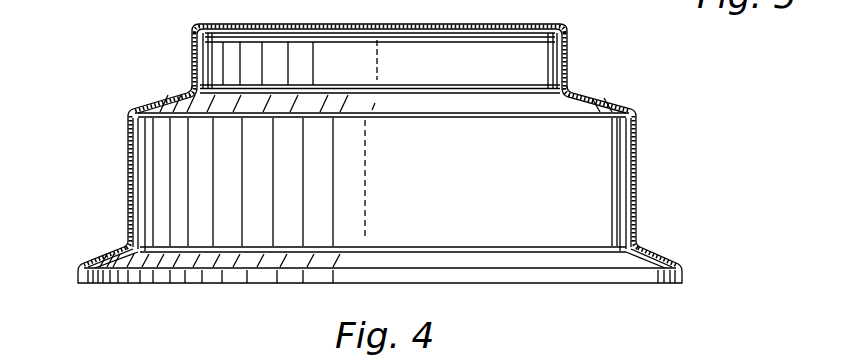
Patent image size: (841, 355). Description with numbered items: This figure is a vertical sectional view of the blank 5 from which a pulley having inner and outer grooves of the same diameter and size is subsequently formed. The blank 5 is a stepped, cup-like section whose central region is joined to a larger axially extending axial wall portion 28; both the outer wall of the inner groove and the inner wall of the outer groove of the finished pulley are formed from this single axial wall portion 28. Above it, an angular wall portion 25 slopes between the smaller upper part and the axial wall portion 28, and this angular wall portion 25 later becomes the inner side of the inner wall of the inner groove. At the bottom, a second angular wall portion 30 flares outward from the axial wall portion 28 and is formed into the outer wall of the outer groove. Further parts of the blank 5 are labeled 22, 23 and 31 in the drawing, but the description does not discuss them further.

The blank 5 is at (642, 151).
The top wall 22 is at (510, 26).
The neck side wall 23 is at (567, 68).
The angular wall portion 25 is at (607, 103).
The axial wall portion 28 is at (637, 190).
The angular wall portion 30 is at (655, 257).
The flange rim 31 is at (683, 278).